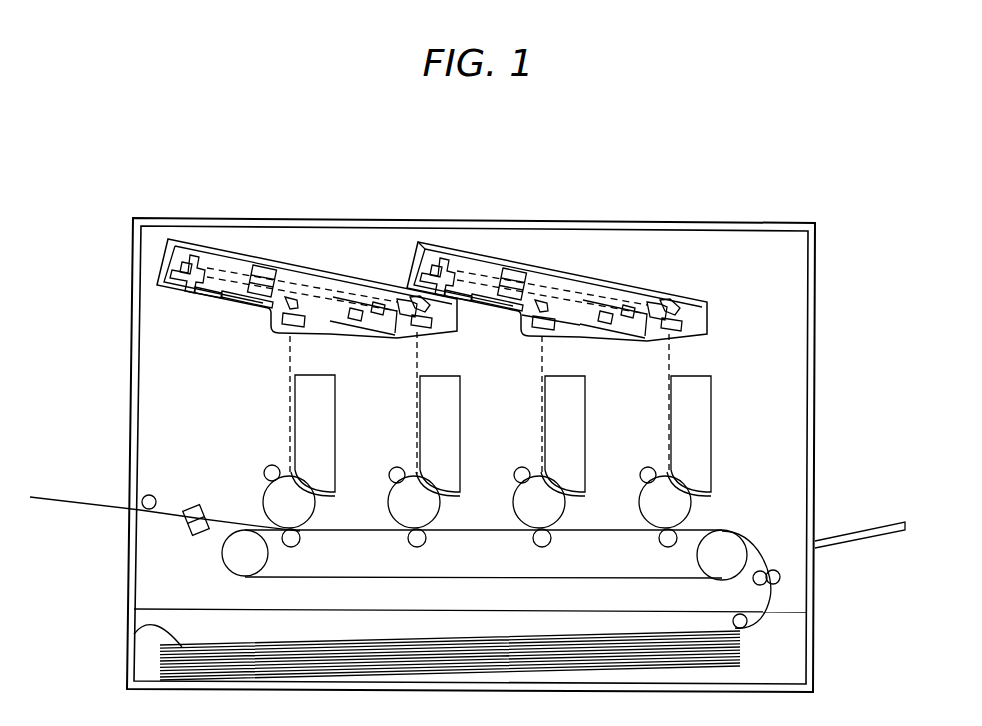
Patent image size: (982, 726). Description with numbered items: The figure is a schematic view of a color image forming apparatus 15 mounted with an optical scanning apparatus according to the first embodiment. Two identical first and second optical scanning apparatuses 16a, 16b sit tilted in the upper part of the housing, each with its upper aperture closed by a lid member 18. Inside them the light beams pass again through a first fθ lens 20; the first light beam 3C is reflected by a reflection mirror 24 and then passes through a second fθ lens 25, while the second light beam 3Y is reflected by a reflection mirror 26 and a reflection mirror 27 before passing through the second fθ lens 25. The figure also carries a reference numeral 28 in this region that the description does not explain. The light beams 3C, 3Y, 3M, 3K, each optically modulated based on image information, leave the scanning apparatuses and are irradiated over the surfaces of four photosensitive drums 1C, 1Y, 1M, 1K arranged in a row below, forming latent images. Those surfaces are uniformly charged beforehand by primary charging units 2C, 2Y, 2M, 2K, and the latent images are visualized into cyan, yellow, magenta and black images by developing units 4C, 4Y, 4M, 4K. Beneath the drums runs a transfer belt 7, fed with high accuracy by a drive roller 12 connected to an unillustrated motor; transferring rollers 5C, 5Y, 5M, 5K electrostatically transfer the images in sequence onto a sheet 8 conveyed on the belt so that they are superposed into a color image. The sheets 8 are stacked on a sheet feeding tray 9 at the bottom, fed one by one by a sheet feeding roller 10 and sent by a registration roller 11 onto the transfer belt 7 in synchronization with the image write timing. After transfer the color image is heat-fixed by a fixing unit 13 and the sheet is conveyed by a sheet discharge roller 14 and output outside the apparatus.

The photosensitive drum 1K is at (316, 506).
The photosensitive drum 1M is at (441, 506).
The photosensitive drum 1Y is at (566, 506).
The photosensitive drum 1C is at (692, 503).
The primary charging unit 2K is at (268, 466).
The primary charging unit 2M is at (393, 468).
The primary charging unit 2Y is at (518, 468).
The primary charging unit 2C is at (644, 468).
The light beam 3K is at (300, 355).
The light beam 3M is at (424, 356).
The light beam 3Y is at (550, 356).
The light beam 3C is at (682, 356).
The developing unit 4K is at (323, 402).
The developing unit 4M is at (448, 405).
The developing unit 4Y is at (575, 406).
The developing unit 4C is at (707, 411).
The transferring roller 5K is at (292, 548).
The transferring roller 5M is at (416, 548).
The transferring roller 5Y is at (541, 548).
The transferring roller 5C is at (667, 548).
The transfer belt 7 is at (591, 579).
The sheet 8 is at (132, 636).
The sheet feeding tray 9 is at (147, 665).
The sheet feeding roller 10 is at (733, 621).
The registration roller 11 is at (781, 572).
The drive roller 12 is at (236, 556).
The fixing unit 13 is at (199, 506).
The sheet discharge roller 14 is at (149, 495).
The image forming apparatus 15 is at (565, 222).
The first optical scanning apparatus 16a is at (594, 268).
The second optical scanning apparatus 16b is at (162, 250).
The lid member 18 is at (476, 217).
The first fθ lens 20 is at (548, 265).
The reflection mirror 24 is at (701, 282).
The second fθ lens 25 is at (714, 333).
The reflection mirror 26 is at (639, 285).
The reflection mirror 27 is at (584, 278).
The housing bottom 28 is at (537, 339).